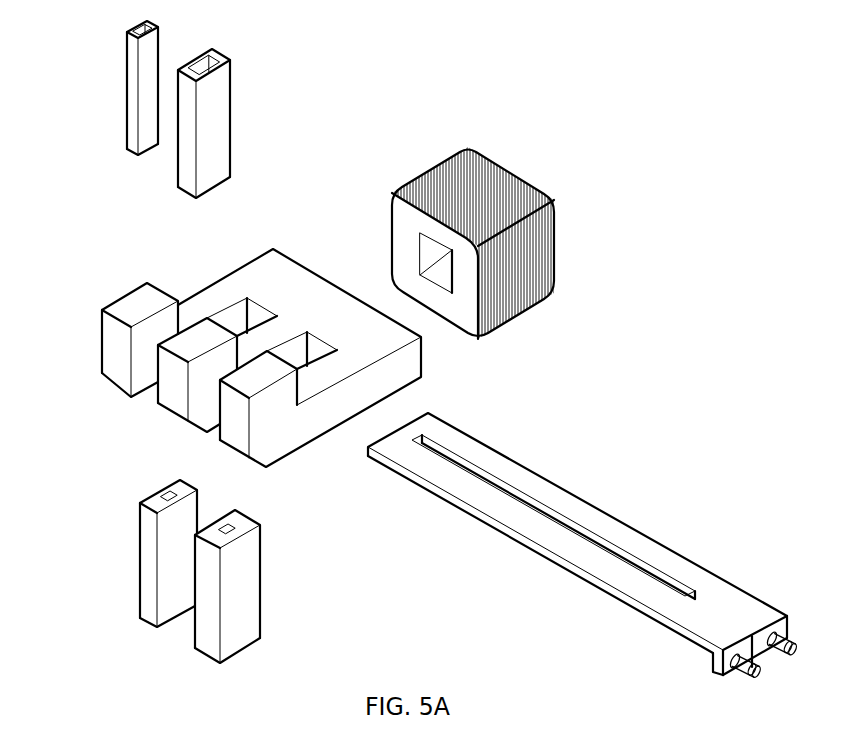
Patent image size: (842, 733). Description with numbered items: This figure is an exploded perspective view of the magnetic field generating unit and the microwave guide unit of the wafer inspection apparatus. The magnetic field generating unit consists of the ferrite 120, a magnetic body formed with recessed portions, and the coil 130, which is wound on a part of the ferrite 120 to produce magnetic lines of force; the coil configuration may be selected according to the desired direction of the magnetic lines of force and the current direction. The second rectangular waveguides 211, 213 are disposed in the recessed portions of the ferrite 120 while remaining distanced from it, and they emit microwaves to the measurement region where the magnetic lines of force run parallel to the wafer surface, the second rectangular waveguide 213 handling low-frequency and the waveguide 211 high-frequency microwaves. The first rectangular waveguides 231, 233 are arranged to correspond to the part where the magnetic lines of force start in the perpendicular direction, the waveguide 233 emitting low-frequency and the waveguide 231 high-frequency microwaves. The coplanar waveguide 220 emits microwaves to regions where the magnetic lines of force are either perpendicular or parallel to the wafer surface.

The ferrite 120 is at (102, 350).
The coil 130 is at (508, 162).
The second rectangular waveguide 211 is at (147, 555).
The second rectangular waveguide 213 is at (253, 583).
The coplanar waveguide 220 is at (697, 565).
The first rectangular waveguide 231 is at (128, 75).
The first rectangular waveguide 233 is at (225, 98).